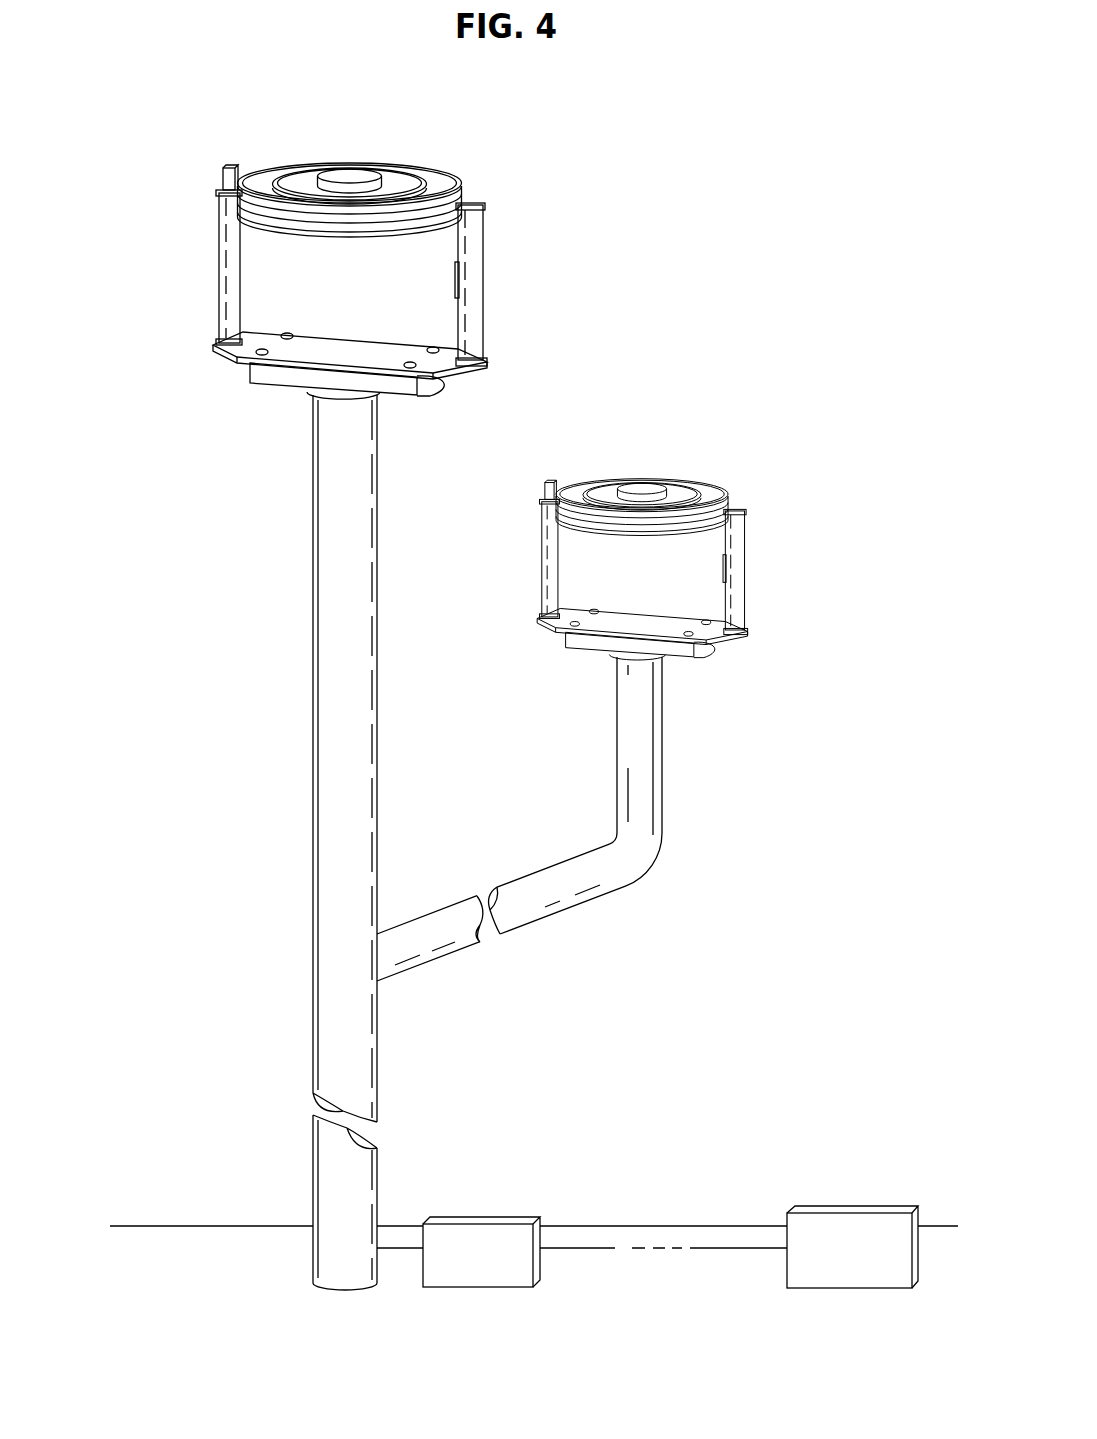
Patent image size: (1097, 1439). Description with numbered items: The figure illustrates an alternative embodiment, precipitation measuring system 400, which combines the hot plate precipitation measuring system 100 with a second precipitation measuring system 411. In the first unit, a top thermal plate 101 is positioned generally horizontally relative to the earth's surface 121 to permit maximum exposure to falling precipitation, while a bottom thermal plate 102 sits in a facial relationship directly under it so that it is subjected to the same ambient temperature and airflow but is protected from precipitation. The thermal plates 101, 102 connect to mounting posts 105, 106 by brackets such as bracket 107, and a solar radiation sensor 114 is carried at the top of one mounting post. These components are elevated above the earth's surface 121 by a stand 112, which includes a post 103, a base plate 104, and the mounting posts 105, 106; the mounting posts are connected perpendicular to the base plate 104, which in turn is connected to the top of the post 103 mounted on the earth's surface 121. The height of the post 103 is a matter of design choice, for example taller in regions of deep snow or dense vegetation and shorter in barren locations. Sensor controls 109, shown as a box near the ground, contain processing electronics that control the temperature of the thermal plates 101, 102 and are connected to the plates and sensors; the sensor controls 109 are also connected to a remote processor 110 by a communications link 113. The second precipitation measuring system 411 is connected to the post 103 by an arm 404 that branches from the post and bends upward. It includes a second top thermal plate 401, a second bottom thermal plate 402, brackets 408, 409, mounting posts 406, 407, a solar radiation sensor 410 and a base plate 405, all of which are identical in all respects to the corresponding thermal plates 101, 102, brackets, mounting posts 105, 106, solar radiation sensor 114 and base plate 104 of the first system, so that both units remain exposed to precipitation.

The precipitation measuring system 100 is at (308, 116).
The top thermal plate 101 is at (456, 190).
The bottom thermal plate 102 is at (325, 238).
The post 103 is at (327, 789).
The base plate 104 is at (229, 358).
The mounting post 105 is at (483, 273).
The mounting post 106 is at (219, 265).
The bracket 107 is at (217, 192).
The sensor controls 109 is at (452, 1288).
The remote processor 110 is at (823, 1290).
The stand 112 is at (470, 387).
The communications link 113 is at (597, 1249).
The solar radiation sensor 114 is at (221, 175).
The earth's surface 121 is at (150, 1226).
The precipitation measuring system 400 is at (827, 179).
The second top thermal plate 401 is at (720, 492).
The second bottom thermal plate 402 is at (643, 533).
The arm 404 is at (542, 882).
The base plate 405 is at (728, 642).
The mounting post 406 is at (738, 592).
The mounting post 407 is at (547, 562).
The bracket 408 is at (746, 510).
The bracket 409 is at (542, 500).
The solar radiation sensor 410 is at (553, 482).
The second precipitation measuring system 411 is at (703, 453).